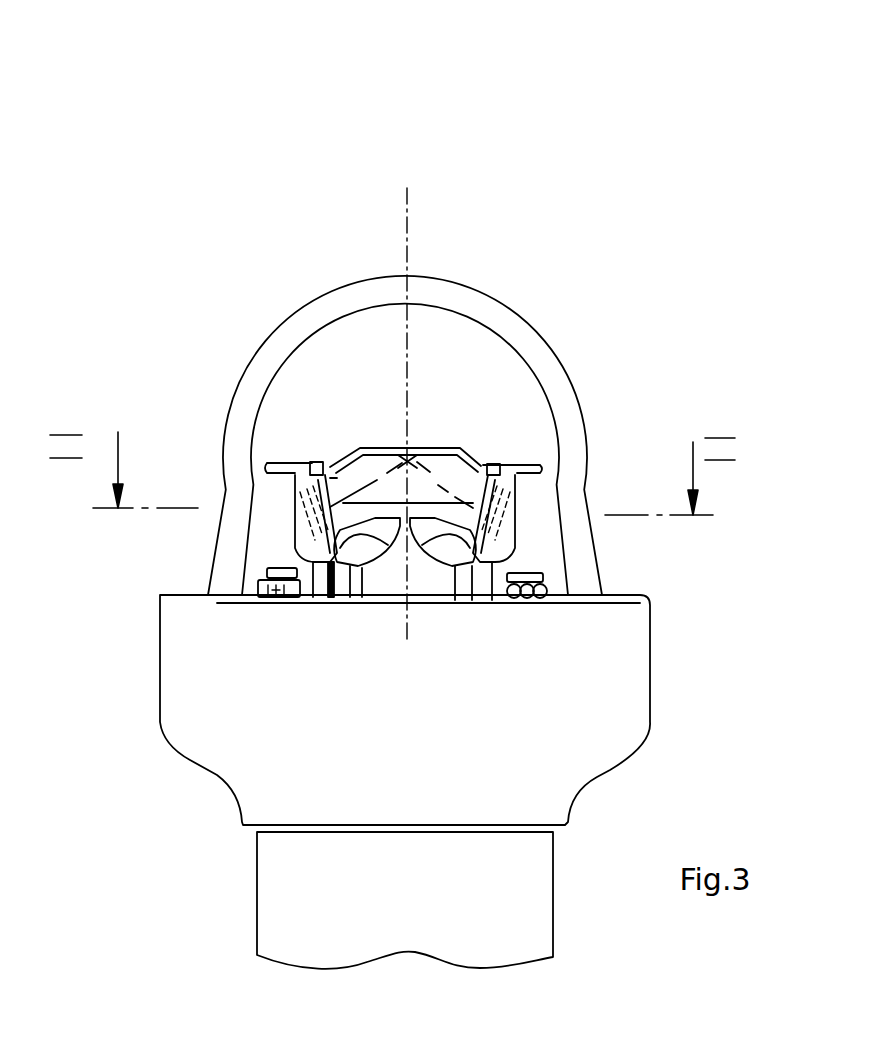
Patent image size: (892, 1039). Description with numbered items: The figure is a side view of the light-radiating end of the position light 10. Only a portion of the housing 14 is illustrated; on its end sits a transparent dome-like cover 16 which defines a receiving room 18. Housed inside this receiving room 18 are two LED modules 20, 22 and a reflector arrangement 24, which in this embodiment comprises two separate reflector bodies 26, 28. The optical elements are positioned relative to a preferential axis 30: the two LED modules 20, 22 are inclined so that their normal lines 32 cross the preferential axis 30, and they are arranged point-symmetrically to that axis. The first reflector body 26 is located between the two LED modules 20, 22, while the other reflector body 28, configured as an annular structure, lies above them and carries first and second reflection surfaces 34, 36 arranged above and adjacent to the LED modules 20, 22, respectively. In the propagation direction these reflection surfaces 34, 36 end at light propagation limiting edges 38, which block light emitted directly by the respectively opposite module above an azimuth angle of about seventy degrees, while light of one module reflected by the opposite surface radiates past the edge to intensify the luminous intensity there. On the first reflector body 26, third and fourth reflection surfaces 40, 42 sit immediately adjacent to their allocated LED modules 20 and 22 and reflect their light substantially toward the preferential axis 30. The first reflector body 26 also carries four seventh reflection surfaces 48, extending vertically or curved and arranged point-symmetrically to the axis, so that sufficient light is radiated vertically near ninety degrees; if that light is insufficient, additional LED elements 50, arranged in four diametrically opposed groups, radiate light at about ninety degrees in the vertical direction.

The position light 10 is at (232, 238).
The housing 14 is at (262, 778).
The transparent dome-like cover 16 is at (525, 345).
The receiving room 18 is at (470, 387).
The first LED module 20 is at (473, 508).
The second LED module 22 is at (307, 517).
The reflector arrangement 24 is at (348, 442).
The first reflector body 26 is at (433, 622).
The second reflector body 28 is at (482, 452).
The preferential axis 30 is at (407, 230).
The normal lines 32 is at (415, 455).
The first reflection surface 34 is at (445, 448).
The second reflection surface 36 is at (328, 462).
The light propagation limiting edges 38 is at (280, 463).
The third reflection surface 40 is at (490, 575).
The fourth reflection surface 42 is at (323, 600).
The seventh reflection surfaces 48 is at (357, 572).
The additional LED elements 50 is at (262, 597).